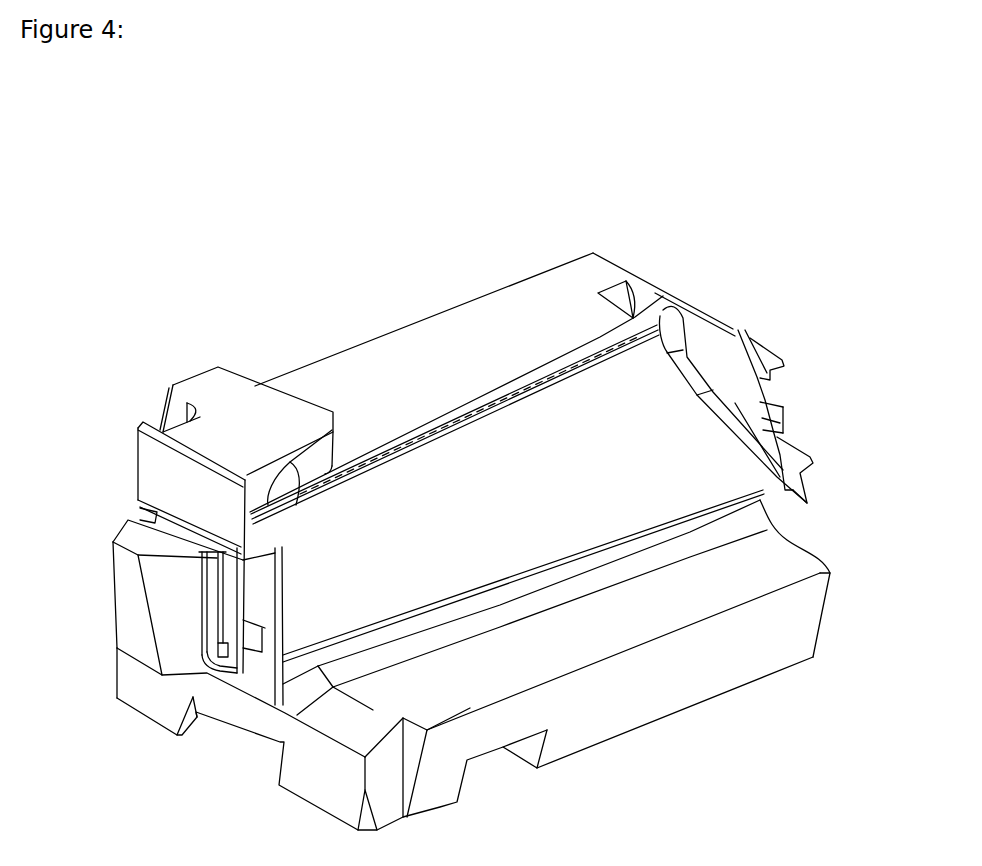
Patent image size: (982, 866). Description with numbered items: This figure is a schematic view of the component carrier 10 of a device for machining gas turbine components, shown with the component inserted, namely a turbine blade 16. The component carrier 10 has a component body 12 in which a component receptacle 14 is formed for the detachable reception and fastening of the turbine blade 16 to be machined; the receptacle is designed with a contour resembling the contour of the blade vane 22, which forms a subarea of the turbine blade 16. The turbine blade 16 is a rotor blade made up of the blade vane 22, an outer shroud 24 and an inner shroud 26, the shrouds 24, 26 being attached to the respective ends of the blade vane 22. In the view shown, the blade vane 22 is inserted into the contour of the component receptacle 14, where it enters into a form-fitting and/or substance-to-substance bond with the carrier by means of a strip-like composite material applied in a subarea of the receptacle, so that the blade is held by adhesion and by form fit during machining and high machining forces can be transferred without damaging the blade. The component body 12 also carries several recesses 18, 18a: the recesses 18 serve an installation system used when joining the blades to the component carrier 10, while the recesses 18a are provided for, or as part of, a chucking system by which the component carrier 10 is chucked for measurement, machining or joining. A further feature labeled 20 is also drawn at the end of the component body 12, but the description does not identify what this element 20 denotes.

The component carrier 10 is at (108, 320).
The component body 12 is at (405, 352).
The component receptacle 14 is at (778, 499).
The turbine blade 16 is at (733, 417).
The recesses 18 is at (643, 307).
The recesses 18a is at (250, 779).
The end block 20 is at (333, 410).
The blade vane 22 is at (492, 518).
The outer shroud 24 is at (778, 362).
The inner shroud 26 is at (152, 500).